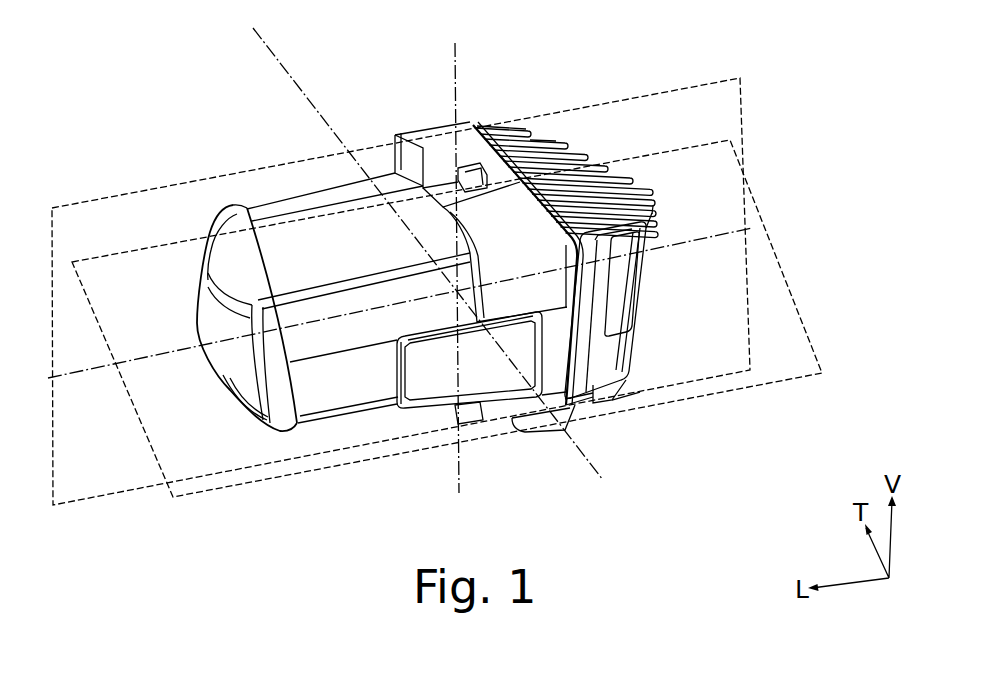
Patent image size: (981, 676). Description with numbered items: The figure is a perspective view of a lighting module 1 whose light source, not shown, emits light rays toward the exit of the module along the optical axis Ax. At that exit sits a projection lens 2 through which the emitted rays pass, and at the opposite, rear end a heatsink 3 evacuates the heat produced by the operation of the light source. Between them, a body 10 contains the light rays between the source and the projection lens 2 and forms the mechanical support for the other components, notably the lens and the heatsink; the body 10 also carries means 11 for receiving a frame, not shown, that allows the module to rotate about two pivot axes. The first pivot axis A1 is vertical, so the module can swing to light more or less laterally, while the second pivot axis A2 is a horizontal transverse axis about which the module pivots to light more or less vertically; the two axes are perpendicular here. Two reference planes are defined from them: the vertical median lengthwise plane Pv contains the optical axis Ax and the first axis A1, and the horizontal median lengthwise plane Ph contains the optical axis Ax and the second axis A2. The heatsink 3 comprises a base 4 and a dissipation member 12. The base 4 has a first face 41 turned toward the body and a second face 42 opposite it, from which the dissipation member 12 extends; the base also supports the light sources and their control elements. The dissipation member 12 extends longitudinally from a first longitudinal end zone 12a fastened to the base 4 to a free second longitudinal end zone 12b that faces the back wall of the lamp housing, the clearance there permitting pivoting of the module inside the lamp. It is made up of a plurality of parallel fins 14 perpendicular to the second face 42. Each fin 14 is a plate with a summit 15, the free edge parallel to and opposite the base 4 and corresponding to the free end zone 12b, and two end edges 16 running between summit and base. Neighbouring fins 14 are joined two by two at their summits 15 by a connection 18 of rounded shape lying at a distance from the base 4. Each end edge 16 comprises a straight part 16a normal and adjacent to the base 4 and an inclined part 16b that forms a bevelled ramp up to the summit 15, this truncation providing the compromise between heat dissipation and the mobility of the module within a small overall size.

The lighting module 1 is at (188, 105).
The projection lens 2 is at (213, 330).
The heatsink 3 is at (596, 433).
The base 4 is at (473, 118).
The body 10 is at (312, 212).
The means for receiving a frame 11 is at (464, 182).
The dissipation member 12 is at (652, 165).
The first longitudinal end zone 12a is at (500, 112).
The second longitudinal end zone 12b is at (660, 182).
The fin 14 is at (623, 168).
The summit 15 is at (665, 242).
The end edge 16 is at (587, 152).
The straight part 16a is at (613, 238).
The inclined part 16b is at (582, 250).
The connection 18 is at (654, 222).
The first face 41 is at (478, 142).
The second face 42 is at (558, 125).
The vertical median lengthwise plane Pv is at (133, 203).
The horizontal median lengthwise plane Ph is at (262, 482).
The optical axis Ax is at (98, 380).
The first pivot axis A1 is at (449, 55).
The second pivot axis A2 is at (270, 63).